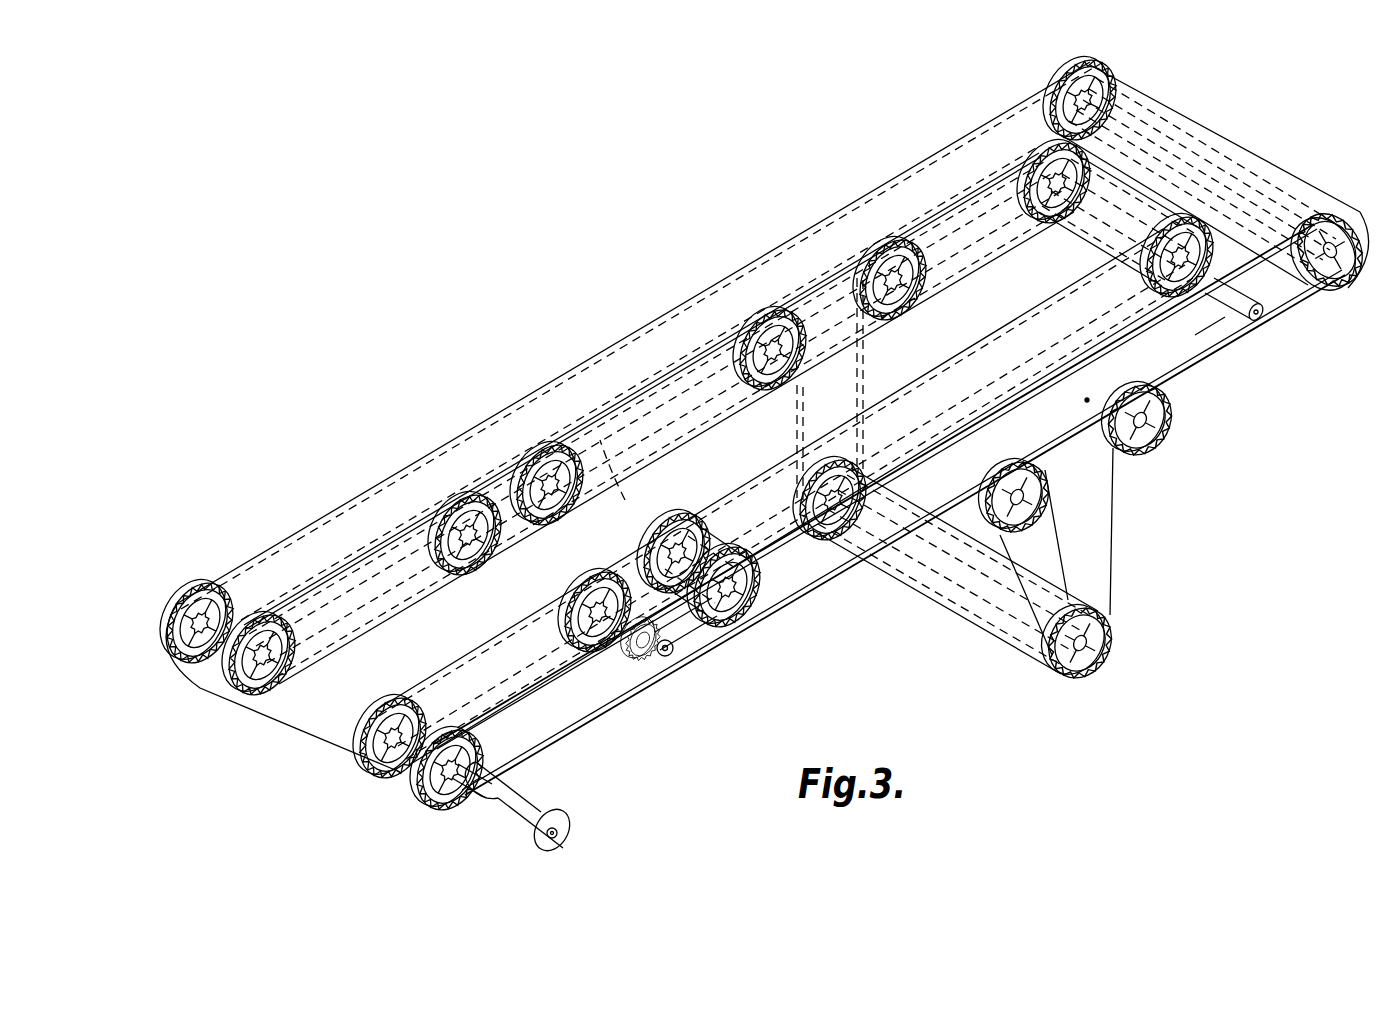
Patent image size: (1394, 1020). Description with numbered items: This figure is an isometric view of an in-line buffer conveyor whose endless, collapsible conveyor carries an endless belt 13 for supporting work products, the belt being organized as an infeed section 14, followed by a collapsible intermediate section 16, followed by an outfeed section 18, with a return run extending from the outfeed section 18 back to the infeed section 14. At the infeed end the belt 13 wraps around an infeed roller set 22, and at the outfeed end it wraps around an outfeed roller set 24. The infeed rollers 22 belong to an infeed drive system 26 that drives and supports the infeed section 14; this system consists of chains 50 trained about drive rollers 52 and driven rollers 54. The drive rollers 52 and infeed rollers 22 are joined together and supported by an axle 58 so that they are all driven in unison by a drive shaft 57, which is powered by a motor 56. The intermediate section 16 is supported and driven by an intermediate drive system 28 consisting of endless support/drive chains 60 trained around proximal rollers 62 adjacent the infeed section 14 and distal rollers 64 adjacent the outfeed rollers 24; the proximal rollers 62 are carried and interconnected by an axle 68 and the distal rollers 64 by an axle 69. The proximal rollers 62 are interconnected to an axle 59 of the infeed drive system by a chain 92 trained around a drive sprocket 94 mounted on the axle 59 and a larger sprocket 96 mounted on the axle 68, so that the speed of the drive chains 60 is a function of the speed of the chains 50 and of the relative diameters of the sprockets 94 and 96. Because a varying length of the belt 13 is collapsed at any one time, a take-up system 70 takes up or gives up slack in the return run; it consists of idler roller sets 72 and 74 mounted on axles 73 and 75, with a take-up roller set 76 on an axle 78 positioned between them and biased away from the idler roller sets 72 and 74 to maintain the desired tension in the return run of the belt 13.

The endless belt 13 is at (440, 468).
The infeed section 14 is at (260, 503).
The collapsible intermediate section 16 is at (552, 258).
The outfeed section 18 is at (943, 118).
The infeed roller set 22 is at (435, 790).
The outfeed roller set 24 is at (1295, 265).
The infeed drive system 26 is at (552, 712).
The intermediate drive system 28 is at (792, 568).
The chains 50 is at (567, 647).
The drive rollers 52 is at (378, 760).
The driven rollers 54 is at (600, 637).
The motor 56 is at (540, 795).
The drive shaft 57 is at (462, 800).
The axle 58 is at (315, 690).
The axle 59 is at (500, 578).
The endless support/drive chains 60 is at (828, 280).
The proximal rollers 62 is at (545, 455).
The distal rollers 64 is at (1210, 345).
The axle 68 is at (625, 500).
The axle 69 is at (1115, 205).
The take-up system 70 is at (1158, 640).
The idler roller set 72 is at (1160, 450).
The axle 73 is at (1095, 396).
The idler roller set 74 is at (1032, 530).
The axle 75 is at (745, 345).
The take-up roller set 76 is at (1075, 665).
The axle 78 is at (975, 598).
The chain 92 is at (690, 645).
The drive sprocket 94 is at (672, 655).
The sprocket 96 is at (735, 605).